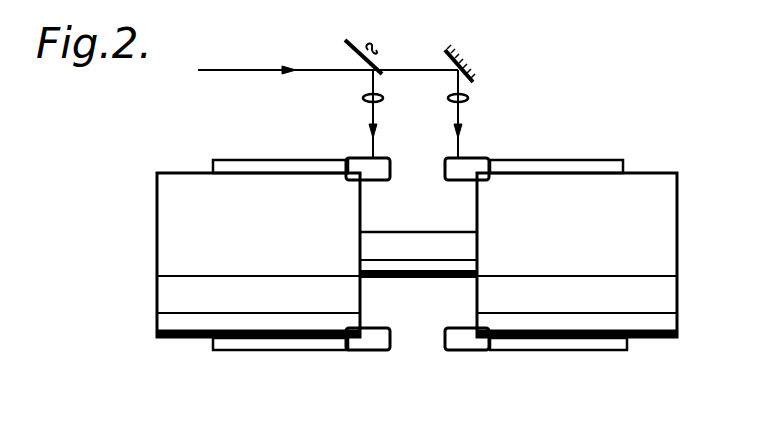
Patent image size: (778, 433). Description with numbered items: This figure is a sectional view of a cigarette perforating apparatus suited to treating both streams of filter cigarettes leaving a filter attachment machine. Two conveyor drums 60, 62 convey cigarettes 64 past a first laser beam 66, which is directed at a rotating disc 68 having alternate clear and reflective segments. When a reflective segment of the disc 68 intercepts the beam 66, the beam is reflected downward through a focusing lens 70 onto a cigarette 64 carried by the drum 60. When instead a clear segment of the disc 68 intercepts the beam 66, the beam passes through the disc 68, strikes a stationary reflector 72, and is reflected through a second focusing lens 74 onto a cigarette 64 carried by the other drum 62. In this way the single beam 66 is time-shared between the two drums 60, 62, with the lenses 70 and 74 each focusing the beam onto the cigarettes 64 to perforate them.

The conveyor drum 60 is at (280, 256).
The conveyor drum 62 is at (598, 256).
The cigarettes 64 is at (288, 160).
The first laser beam 66 is at (236, 69).
The rotating disc 68 is at (347, 40).
The focusing lens 70 is at (364, 103).
The stationary reflector 72 is at (470, 62).
The focusing lens 74 is at (468, 101).